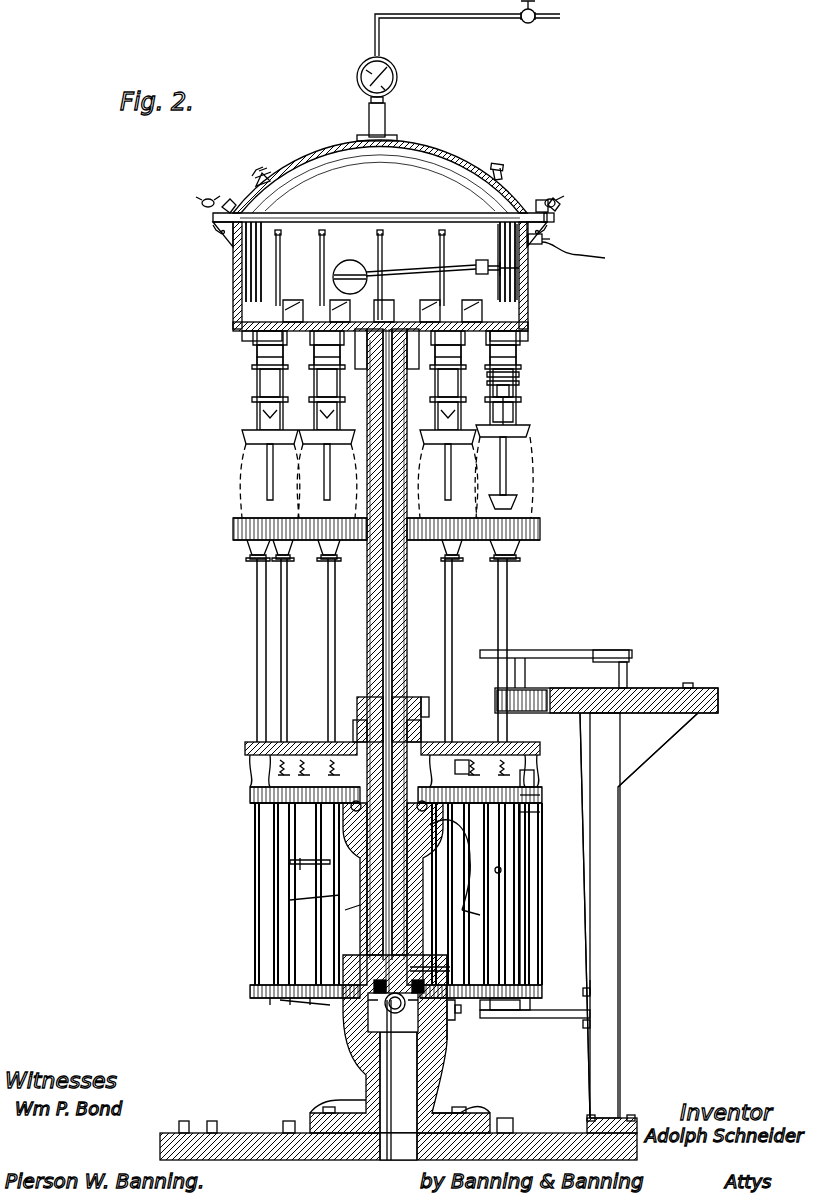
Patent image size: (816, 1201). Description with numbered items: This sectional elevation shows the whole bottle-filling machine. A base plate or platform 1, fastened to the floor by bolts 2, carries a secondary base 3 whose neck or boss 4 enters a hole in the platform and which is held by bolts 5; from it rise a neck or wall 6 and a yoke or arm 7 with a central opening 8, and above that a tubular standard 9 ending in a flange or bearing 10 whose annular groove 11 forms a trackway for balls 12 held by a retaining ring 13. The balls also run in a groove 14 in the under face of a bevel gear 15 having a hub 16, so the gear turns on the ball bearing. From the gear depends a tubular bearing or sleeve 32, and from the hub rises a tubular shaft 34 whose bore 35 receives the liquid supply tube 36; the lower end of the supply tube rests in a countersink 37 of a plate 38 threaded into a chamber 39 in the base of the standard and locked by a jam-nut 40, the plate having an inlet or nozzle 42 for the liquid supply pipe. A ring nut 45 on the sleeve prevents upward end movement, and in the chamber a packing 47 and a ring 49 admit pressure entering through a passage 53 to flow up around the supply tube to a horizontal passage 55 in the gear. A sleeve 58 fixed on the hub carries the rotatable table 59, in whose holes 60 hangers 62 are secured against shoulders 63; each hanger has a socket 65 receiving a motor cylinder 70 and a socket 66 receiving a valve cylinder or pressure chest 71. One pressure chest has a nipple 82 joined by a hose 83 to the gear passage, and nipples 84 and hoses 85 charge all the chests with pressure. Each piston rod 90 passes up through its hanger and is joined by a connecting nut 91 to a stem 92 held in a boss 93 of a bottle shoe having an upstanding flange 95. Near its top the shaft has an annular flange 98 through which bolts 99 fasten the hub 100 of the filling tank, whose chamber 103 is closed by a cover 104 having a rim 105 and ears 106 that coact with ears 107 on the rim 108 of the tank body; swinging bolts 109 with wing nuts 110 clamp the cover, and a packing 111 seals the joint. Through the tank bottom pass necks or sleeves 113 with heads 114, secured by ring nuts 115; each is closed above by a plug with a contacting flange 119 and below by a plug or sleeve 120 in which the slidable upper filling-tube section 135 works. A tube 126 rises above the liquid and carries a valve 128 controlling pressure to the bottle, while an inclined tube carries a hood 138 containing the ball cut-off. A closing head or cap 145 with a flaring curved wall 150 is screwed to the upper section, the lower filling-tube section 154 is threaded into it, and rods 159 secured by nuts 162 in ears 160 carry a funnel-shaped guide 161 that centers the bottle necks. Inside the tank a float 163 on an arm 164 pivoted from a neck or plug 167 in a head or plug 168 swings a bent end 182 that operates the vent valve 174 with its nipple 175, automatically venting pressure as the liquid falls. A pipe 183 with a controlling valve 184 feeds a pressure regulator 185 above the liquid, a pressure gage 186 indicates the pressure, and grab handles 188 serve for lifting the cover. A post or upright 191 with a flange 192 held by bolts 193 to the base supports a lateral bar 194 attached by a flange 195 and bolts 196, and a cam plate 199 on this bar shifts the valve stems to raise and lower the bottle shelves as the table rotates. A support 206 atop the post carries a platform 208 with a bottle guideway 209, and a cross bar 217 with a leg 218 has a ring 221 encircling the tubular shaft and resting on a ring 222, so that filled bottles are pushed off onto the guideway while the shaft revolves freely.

The base plate 1 is at (398, 1161).
The base blocks 2 is at (190, 1122).
The base block 3 is at (490, 1110).
The base bore 4 is at (401, 1161).
The hub blocks 5 is at (328, 1107).
The pedestal hub 6 is at (365, 1096).
The pedestal 7 is at (345, 1010).
The pedestal wall 8 is at (432, 1050).
The inner casting 9 is at (345, 910).
The inner casting 10 is at (343, 838).
The cylinder wall 11 is at (345, 812).
The ring 12 is at (255, 802).
The ring 13 is at (535, 812).
The top ring 14 is at (252, 790).
The ring 15 is at (540, 795).
The column inner line 16 is at (355, 697).
The bar 32 is at (290, 900).
The central column 34 is at (367, 590).
The column wall 35 is at (407, 590).
The column bore 36 is at (392, 618).
The bottom plate 37 is at (330, 1003).
The bearing housing 38 is at (393, 1012).
The bracket 39 is at (460, 1014).
The bearing 40 is at (412, 997).
The shaft 42 is at (389, 1040).
The bottom ring 45 is at (345, 965).
The bottom ring 47 is at (345, 985).
The pins 49 is at (350, 995).
The bracket 53 is at (510, 1012).
The collar 55 is at (421, 726).
The collar 58 is at (432, 700).
The plate 59 is at (245, 745).
The springs 60 is at (250, 762).
The block 62 is at (534, 778).
The spring 63 is at (540, 760).
The ball 65 is at (260, 805).
The block 66 is at (470, 768).
The cylinder 70 is at (255, 850).
The tube 71 is at (520, 925).
The tube 82 is at (475, 870).
The tube 83 is at (440, 835).
The pin 84 is at (501, 872).
The tube end 85 is at (482, 915).
The rods 90 is at (257, 630).
The flanges 91 is at (253, 560).
The flanges 92 is at (246, 560).
The cups 93 is at (520, 548).
The plate 95 is at (540, 522).
The column top 98 is at (410, 368).
The rods 99 is at (518, 358).
The bottom plate 100 is at (528, 336).
The rod 103 is at (380, 244).
The dome 104 is at (420, 148).
The lug 105 is at (541, 199).
The lug 106 is at (556, 212).
The bracket 107 is at (222, 240).
The bracket pin 108 is at (216, 229).
The lug 109 is at (224, 205).
The wing nut 110 is at (202, 203).
The gasket ring 111 is at (375, 212).
The disc 113 is at (255, 367).
The block 114 is at (253, 338).
The block 115 is at (257, 352).
The plate 119 is at (240, 324).
The body 120 is at (260, 385).
The cylinder wall 126 is at (320, 262).
The rod 128 is at (280, 240).
The discs 135 is at (519, 378).
The valve 138 is at (385, 300).
The block 145 is at (509, 392).
The body 150 is at (260, 415).
The bottle outline 154 is at (242, 488).
The valve 159 is at (262, 420).
The rod 160 is at (267, 452).
The cup 161 is at (250, 435).
The flange 162 is at (255, 400).
The float ball 163 is at (344, 262).
The pipe 164 is at (422, 270).
The fitting 167 is at (482, 258).
The wall band 168 is at (525, 258).
The tube 174 is at (587, 248).
The fitting 175 is at (550, 238).
The rod 182 is at (475, 255).
The pipe 183 is at (379, 30).
The valve 184 is at (526, 23).
The gauge fitting 185 is at (385, 114).
The pressure gauge 186 is at (398, 78).
The knob 188 is at (265, 170).
The column 191 is at (639, 915).
The foot 192 is at (612, 1118).
The bolts 193 is at (655, 1092).
The bar 194 is at (530, 1018).
The pin 195 is at (590, 985).
The clips 196 is at (584, 1028).
The bracket 199 is at (495, 1012).
The bracket 206 is at (639, 915).
The shelf 208 is at (655, 688).
The block 209 is at (690, 683).
The bar 217 is at (560, 650).
The block 218 is at (625, 650).
The shaft 221 is at (367, 655).
The line 222 is at (367, 660).